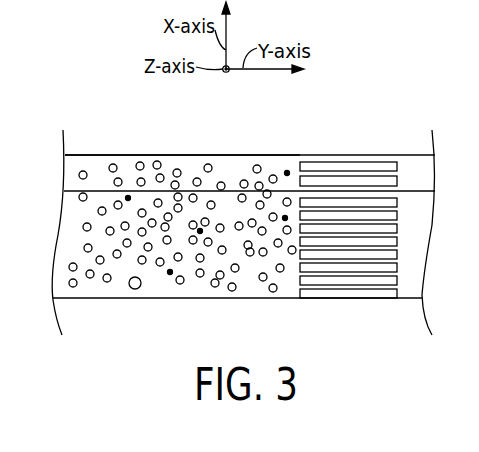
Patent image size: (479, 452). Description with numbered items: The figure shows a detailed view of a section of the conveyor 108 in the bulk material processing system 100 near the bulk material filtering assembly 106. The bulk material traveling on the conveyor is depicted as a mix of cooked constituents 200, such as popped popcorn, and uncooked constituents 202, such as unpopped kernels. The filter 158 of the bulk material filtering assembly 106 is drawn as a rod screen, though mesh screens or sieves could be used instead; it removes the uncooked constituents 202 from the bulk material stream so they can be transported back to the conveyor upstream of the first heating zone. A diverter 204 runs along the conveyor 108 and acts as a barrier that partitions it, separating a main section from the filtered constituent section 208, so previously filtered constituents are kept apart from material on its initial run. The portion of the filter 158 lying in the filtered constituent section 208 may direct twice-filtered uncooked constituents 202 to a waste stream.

The bulk material processing system 100 is at (171, 136).
The bulk material filtering assembly 106 is at (393, 143).
The conveyor 108 is at (222, 299).
The filter 158 is at (349, 307).
The cooked constituents 200 is at (263, 281).
The uncooked constituents 202 is at (287, 171).
The diverter 204 is at (231, 189).
The filtered constituent section 208 is at (200, 151).